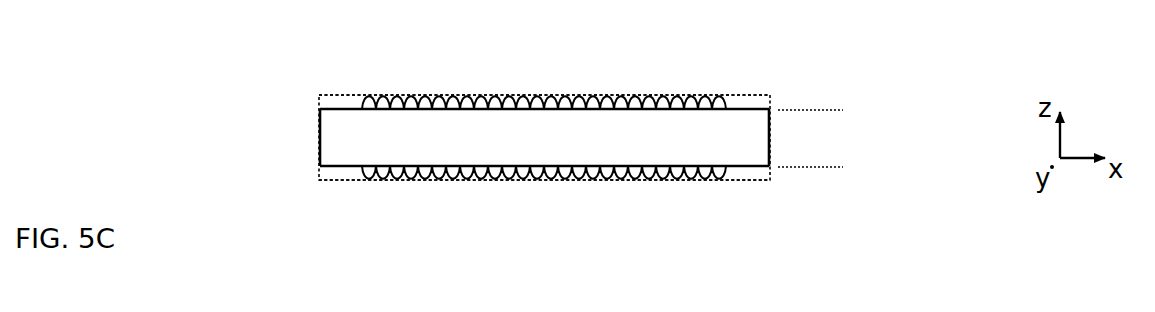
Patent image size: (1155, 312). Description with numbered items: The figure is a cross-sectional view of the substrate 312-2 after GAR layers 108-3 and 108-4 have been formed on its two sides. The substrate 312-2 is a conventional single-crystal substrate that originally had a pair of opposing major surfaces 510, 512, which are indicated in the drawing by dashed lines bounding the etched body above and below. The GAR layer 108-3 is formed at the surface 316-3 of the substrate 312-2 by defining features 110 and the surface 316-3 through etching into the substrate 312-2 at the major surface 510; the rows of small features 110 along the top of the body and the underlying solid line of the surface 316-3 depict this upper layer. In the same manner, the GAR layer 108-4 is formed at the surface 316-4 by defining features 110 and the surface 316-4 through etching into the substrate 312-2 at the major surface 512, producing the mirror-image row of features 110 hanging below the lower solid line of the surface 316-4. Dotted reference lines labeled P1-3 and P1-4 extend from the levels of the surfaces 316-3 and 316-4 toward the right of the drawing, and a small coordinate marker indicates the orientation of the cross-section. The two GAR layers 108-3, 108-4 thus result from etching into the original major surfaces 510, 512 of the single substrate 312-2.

The substrate 312-2 is at (555, 134).
The GAR layer 108-3 is at (407, 82).
The GAR layer 108-4 is at (412, 193).
The features 110 is at (665, 110).
The surface 316-3 is at (340, 113).
The surface 316-4 is at (747, 165).
The major surface 510 is at (745, 95).
The major surface 512 is at (747, 180).
The plane P1-3 is at (815, 110).
The plane P1-4 is at (815, 167).